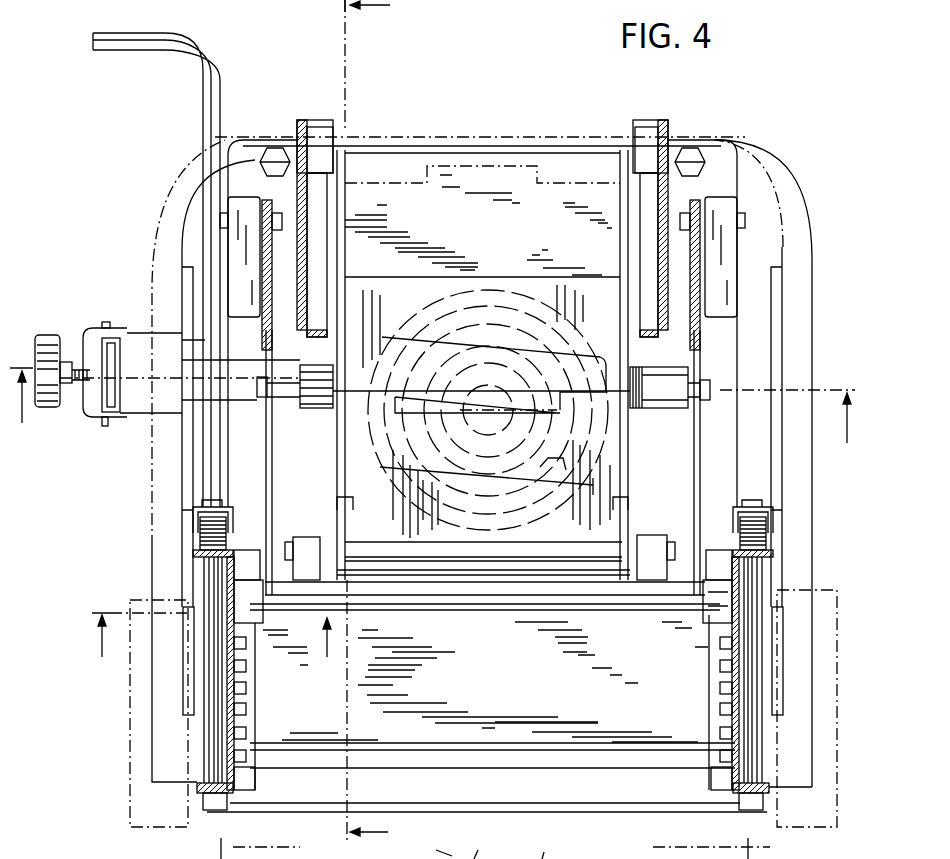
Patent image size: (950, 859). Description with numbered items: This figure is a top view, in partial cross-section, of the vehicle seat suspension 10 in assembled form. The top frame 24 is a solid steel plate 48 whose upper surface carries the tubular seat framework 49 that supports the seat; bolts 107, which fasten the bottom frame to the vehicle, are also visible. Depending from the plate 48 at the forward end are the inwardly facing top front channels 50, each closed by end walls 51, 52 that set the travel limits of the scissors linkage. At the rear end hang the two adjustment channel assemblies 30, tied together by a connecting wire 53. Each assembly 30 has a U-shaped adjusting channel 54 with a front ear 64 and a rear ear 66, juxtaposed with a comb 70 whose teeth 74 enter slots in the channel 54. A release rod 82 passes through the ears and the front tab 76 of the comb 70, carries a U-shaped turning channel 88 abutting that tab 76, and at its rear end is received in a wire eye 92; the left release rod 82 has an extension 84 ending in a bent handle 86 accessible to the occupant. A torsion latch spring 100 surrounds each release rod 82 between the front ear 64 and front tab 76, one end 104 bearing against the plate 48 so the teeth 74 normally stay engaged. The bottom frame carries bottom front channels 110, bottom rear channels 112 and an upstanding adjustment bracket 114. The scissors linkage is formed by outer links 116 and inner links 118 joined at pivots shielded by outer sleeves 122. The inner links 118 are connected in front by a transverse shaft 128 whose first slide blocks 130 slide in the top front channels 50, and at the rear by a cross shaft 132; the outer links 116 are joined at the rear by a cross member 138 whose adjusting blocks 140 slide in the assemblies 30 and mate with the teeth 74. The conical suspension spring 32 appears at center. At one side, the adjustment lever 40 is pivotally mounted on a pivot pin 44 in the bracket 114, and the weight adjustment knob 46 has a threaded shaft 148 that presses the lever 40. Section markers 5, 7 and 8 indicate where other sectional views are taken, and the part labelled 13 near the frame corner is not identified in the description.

The section line 5- 5 is at (357, 424).
The section line 7- 7 is at (493, 841).
The section line 8- 8 is at (212, 649).
The vehicle seat suspension 10 is at (483, 62).
The frame 13 is at (340, 140).
The top frame 24 is at (430, 847).
The adjustment channel assembly 30 is at (483, 677).
The suspension spring 32 is at (548, 300).
The adjustment lever 40 is at (127, 345).
The pivot pin 44 is at (108, 323).
The weight adjustment knob 46 is at (45, 335).
The plate 48 is at (528, 847).
The tubular seat framework 49 is at (777, 192).
The top front channel 50 is at (538, 228).
The end wall 51 is at (315, 122).
The end wall 52 is at (315, 333).
The connecting wire 53 is at (505, 808).
The adjusting channel 54 is at (250, 770).
The front ear 64 is at (200, 556).
The rear ear 66 is at (197, 788).
The comb 70 is at (193, 707).
The teeth 74 is at (248, 732).
The front tab 76 is at (200, 530).
The release rod 82 is at (213, 670).
The extension 84 is at (220, 127).
The handle 86 is at (160, 33).
The turning channel 88 is at (233, 515).
The wire eye 92 is at (210, 812).
The torsion latch spring 100 is at (210, 538).
The end 104 is at (486, 840).
The bolts 107 is at (705, 157).
The bottom front channel 110 is at (248, 263).
The bottom rear channel 112 is at (337, 500).
The adjustment bracket 114 is at (85, 325).
The outer link 116 is at (265, 458).
The inner link 118 is at (345, 505).
The outer sleeve 122 is at (333, 408).
The transverse shaft 128 is at (545, 150).
The first slide block 130 is at (620, 145).
The cross shaft 132 is at (433, 547).
The cross member 138 is at (507, 598).
The adjusting block 140 is at (715, 603).
The shaft 148 is at (82, 417).